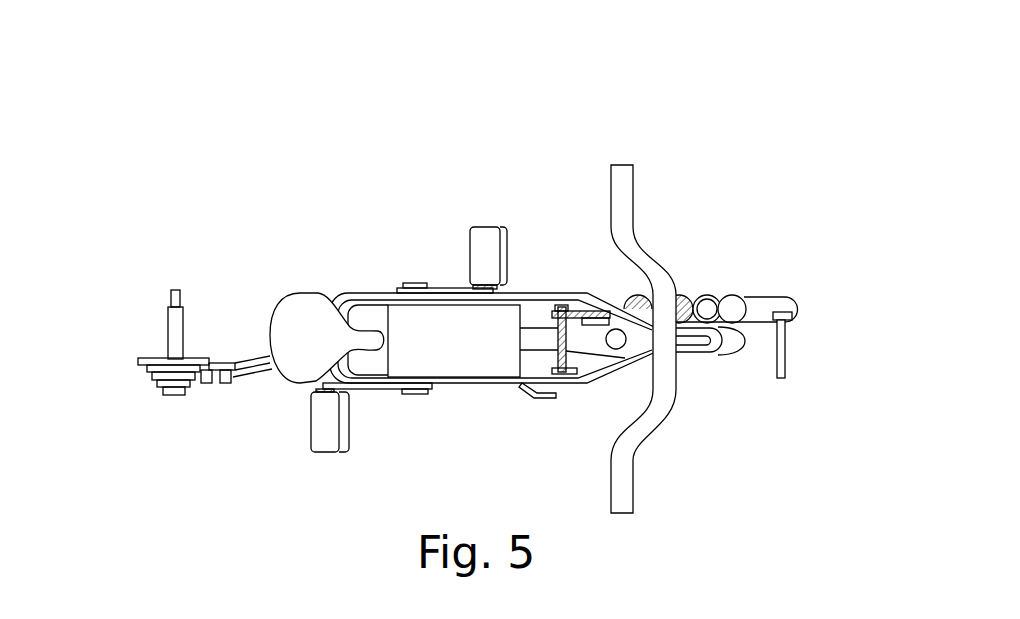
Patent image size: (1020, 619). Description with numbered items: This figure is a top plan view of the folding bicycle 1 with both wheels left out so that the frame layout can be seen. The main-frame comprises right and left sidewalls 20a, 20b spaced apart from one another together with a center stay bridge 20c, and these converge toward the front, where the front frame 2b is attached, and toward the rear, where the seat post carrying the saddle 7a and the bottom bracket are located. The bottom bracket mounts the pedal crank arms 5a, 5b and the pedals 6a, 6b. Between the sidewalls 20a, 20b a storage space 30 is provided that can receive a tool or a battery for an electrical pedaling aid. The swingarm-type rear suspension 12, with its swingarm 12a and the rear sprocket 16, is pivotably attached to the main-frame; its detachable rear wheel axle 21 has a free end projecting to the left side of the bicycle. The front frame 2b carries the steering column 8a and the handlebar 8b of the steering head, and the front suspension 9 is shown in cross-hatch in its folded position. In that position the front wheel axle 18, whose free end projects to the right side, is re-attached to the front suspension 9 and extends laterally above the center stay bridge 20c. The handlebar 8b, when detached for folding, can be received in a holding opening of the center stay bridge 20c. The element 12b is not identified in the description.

The folding bicycle 1 is at (218, 126).
The rear suspension 12 is at (183, 320).
The rear wheel axle 21 is at (175, 290).
The rear sprocket 16 is at (145, 372).
The swingarm 12a is at (212, 385).
The spacer 12b is at (243, 372).
The saddle 7a is at (298, 305).
The storage space 30 is at (392, 297).
The pedal crank arm 5b is at (455, 288).
The pedal crank arm 5a is at (367, 393).
The pedal 6b is at (483, 237).
The pedal 6a is at (325, 445).
The left sidewall 20a is at (468, 388).
The right sidewall 20b is at (535, 297).
The center stay bridge 20c is at (540, 338).
The front wheel suspension 9 is at (754, 312).
The steering column 8a is at (753, 297).
The handlebar 8b is at (622, 165).
The front frame 2b is at (737, 345).
The front wheel axle 18 is at (793, 365).